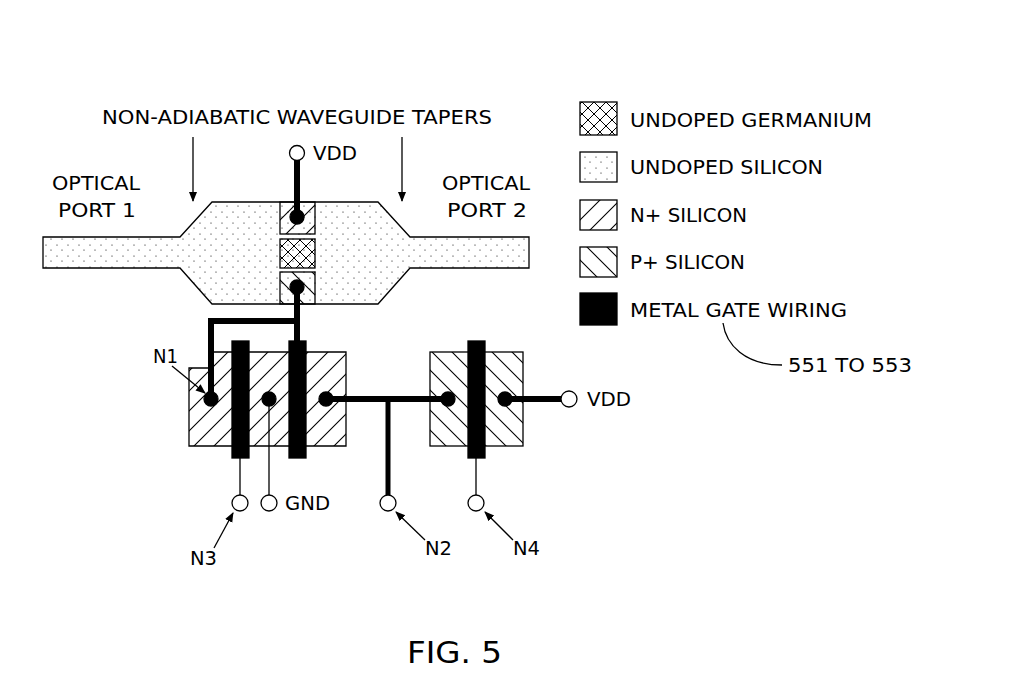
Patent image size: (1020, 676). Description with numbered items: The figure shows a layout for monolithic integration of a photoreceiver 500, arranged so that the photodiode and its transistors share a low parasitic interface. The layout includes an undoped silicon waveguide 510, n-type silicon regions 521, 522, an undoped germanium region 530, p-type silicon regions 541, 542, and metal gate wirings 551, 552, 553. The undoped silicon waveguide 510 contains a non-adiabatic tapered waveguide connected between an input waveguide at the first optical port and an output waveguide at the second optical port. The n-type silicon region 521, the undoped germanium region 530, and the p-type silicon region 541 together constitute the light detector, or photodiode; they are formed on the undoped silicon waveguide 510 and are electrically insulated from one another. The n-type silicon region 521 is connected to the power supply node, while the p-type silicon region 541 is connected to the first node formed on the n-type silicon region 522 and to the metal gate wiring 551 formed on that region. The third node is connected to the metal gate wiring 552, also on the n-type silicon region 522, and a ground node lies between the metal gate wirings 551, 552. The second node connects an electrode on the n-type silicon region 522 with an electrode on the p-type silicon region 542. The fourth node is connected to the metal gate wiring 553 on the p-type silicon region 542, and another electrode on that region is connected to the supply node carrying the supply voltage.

The photoreceiver 500 is at (792, 53).
The undoped silicon waveguide 510 is at (835, 167).
The n-type silicon region 521 is at (292, 207).
The n-type silicon region 522 is at (189, 401).
The undoped germanium region 530 is at (882, 120).
The p-type silicon region 541 is at (305, 298).
The p-type silicon region 542 is at (497, 352).
The metal gate wiring 551 is at (307, 386).
The metal gate wiring 552 is at (189, 433).
The metal gate wiring 553 is at (485, 428).